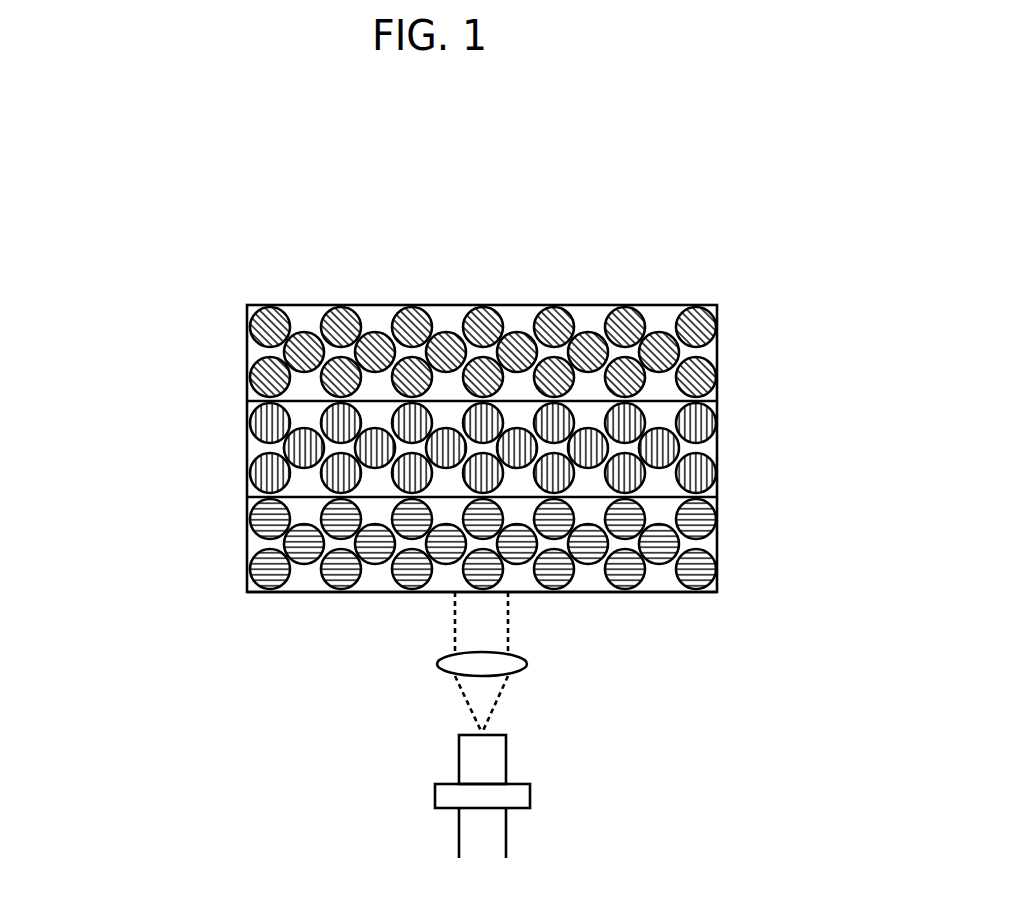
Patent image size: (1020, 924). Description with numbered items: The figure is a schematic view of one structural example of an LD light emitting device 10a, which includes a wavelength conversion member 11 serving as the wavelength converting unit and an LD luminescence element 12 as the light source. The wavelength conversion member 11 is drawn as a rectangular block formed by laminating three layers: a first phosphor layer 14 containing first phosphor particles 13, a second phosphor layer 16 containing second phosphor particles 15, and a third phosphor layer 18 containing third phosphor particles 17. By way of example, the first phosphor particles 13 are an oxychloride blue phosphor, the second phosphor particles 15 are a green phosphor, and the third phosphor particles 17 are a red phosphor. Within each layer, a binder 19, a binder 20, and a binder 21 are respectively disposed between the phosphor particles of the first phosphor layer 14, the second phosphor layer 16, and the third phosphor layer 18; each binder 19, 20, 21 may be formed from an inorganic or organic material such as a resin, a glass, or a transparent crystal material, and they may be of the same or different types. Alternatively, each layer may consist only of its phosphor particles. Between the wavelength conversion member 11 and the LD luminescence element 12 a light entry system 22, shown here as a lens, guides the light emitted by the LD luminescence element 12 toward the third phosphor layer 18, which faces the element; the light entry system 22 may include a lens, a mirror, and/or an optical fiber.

The LD light emitting device 10a is at (688, 262).
The wavelength conversion member 11 is at (98, 335).
The LD luminescence element 12 is at (475, 757).
The first phosphor particles 13 is at (412, 325).
The first phosphor layer 14 is at (240, 352).
The second phosphor particles 15 is at (700, 423).
The second phosphor layer 16 is at (240, 443).
The third phosphor particles 17 is at (300, 546).
The third phosphor layer 18 is at (240, 538).
The binder 19 is at (592, 318).
The binder 20 is at (708, 450).
The binder 21 is at (658, 580).
The light entry system 22 is at (502, 664).